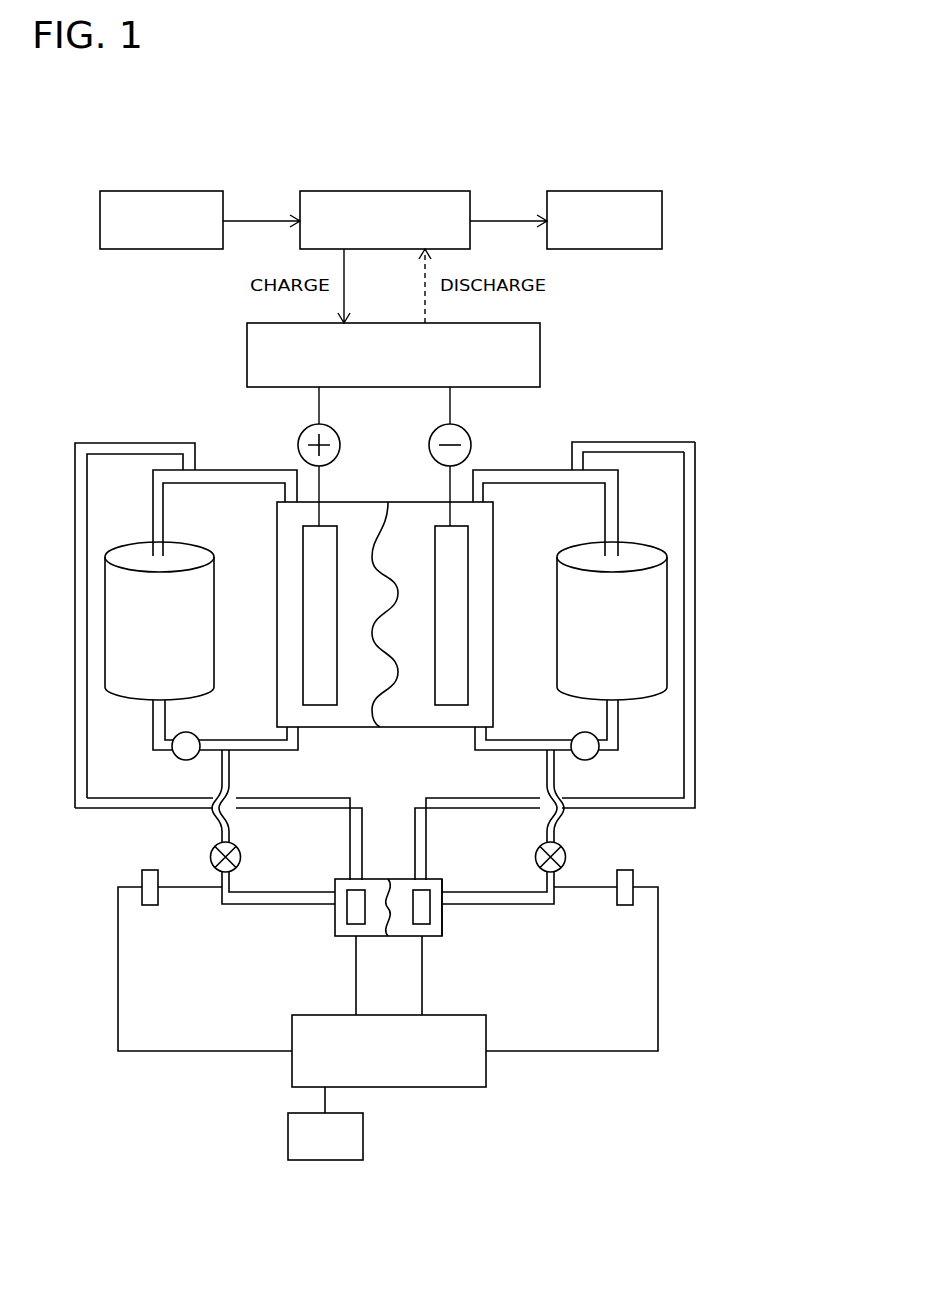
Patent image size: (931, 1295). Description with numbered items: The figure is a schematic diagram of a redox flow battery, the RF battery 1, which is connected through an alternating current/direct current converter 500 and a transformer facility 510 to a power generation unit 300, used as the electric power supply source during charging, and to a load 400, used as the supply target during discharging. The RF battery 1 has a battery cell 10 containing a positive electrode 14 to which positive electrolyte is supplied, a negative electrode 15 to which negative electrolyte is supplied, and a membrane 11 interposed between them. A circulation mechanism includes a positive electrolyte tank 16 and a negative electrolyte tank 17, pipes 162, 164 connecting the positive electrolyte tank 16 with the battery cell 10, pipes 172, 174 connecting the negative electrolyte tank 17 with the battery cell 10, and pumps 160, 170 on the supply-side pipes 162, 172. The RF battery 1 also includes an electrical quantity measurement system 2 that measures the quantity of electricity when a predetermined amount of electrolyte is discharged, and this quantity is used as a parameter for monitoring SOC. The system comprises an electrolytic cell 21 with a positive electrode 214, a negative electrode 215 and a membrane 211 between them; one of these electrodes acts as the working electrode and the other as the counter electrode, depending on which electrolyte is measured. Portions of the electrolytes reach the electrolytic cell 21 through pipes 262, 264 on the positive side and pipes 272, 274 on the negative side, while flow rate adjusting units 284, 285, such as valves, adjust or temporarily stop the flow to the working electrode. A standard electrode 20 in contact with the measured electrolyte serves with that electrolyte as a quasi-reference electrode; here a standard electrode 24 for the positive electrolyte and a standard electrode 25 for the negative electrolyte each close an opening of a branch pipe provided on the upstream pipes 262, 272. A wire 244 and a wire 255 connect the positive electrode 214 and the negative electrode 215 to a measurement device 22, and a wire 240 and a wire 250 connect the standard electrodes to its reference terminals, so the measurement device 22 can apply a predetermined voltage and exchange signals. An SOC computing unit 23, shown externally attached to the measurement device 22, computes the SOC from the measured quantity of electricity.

The RF battery 1 is at (632, 413).
The electrical quantity measurement system 2 is at (388, 868).
The battery cell 10 is at (388, 498).
The membrane 11 is at (405, 690).
The positive electrode 14 is at (327, 697).
The negative electrode 15 is at (458, 697).
The positive electrolyte tank 16 is at (128, 550).
The negative electrolyte tank 17 is at (645, 550).
The standard electrode 20 is at (691, 1156).
The electrolytic cell 21 is at (448, 913).
The measurement device 22 is at (475, 1073).
The SOC computing unit 23 is at (350, 1138).
The standard electrode 24 is at (152, 906).
The standard electrode 25 is at (625, 906).
The pump 160 is at (180, 757).
The pipe 162 is at (247, 740).
The pipe 164 is at (235, 468).
The pump 170 is at (593, 757).
The pipe 172 is at (527, 740).
The pipe 174 is at (531, 468).
The membrane 211 is at (393, 937).
The positive electrode 214 is at (352, 914).
The negative electrode 215 is at (425, 914).
The wire 240 is at (118, 938).
The wire 244 is at (355, 986).
The wire 250 is at (658, 938).
The wire 255 is at (424, 986).
The pipe 262 is at (216, 825).
The pipe 264 is at (75, 478).
The pipe 272 is at (558, 825).
The pipe 274 is at (706, 470).
The flow rate adjusting unit 284 is at (210, 855).
The flow rate adjusting unit 285 is at (565, 856).
The power generation unit 300 is at (160, 190).
The load 400 is at (608, 190).
The alternating current/direct current converter 500 is at (505, 323).
The transformer facility 510 is at (463, 190).